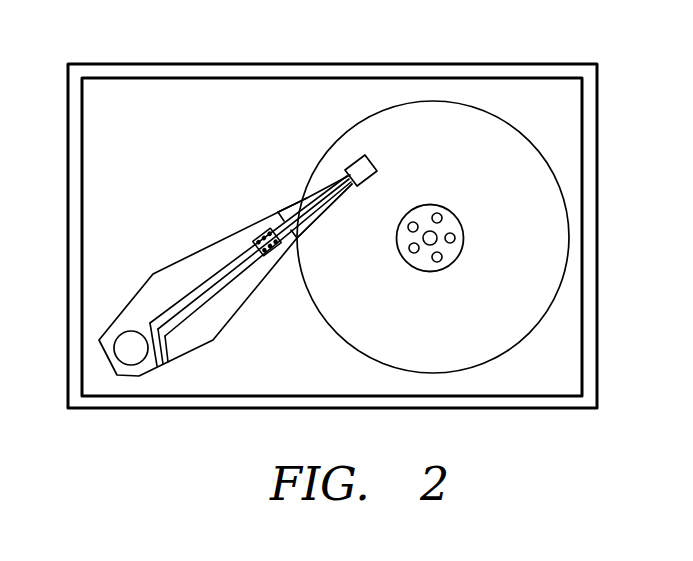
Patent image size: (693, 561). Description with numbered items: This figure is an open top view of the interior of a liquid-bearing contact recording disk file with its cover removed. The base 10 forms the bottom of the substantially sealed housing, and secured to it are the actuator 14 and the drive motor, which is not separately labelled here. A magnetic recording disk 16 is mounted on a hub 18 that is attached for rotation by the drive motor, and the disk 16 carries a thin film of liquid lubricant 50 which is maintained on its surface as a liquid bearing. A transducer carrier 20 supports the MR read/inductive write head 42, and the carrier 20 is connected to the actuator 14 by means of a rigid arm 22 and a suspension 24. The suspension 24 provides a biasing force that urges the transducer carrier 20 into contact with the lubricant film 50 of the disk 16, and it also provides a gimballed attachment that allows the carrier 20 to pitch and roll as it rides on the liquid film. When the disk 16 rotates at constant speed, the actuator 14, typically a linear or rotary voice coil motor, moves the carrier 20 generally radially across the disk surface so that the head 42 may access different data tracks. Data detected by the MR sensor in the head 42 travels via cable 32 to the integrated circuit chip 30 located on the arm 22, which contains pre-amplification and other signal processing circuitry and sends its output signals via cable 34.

The base 10 is at (595, 153).
The actuator 14 is at (124, 360).
The magnetic recording disk 16 is at (553, 302).
The hub 18 is at (456, 221).
The transducer carrier 20 is at (359, 157).
The rigid arm 22 is at (128, 304).
The suspension 24 is at (303, 244).
The integrated circuit chip 30 is at (257, 238).
The cable 32 is at (299, 197).
The cable 34 is at (170, 366).
The MR read/inductive write head 42 is at (348, 190).
The thin film of liquid lubricant 50 is at (468, 118).